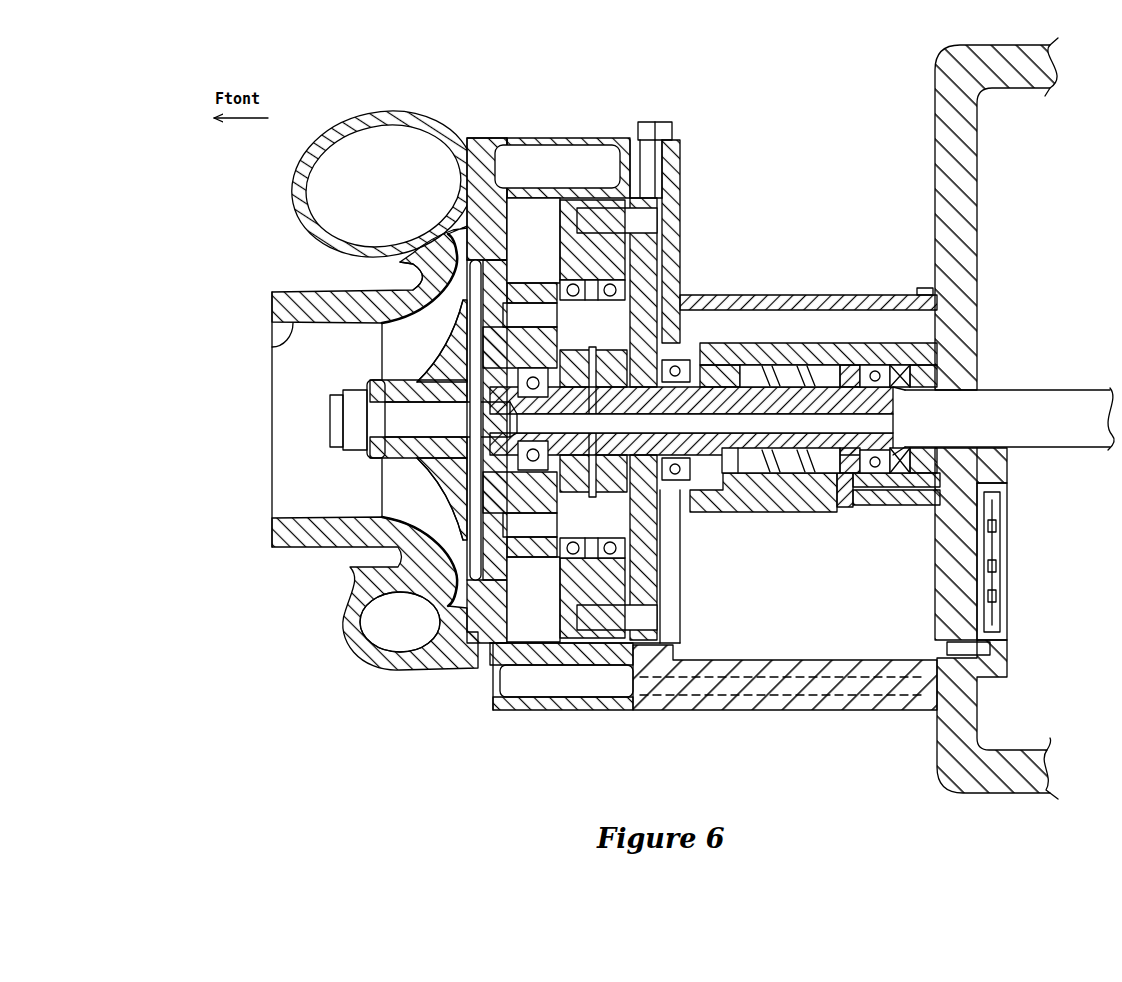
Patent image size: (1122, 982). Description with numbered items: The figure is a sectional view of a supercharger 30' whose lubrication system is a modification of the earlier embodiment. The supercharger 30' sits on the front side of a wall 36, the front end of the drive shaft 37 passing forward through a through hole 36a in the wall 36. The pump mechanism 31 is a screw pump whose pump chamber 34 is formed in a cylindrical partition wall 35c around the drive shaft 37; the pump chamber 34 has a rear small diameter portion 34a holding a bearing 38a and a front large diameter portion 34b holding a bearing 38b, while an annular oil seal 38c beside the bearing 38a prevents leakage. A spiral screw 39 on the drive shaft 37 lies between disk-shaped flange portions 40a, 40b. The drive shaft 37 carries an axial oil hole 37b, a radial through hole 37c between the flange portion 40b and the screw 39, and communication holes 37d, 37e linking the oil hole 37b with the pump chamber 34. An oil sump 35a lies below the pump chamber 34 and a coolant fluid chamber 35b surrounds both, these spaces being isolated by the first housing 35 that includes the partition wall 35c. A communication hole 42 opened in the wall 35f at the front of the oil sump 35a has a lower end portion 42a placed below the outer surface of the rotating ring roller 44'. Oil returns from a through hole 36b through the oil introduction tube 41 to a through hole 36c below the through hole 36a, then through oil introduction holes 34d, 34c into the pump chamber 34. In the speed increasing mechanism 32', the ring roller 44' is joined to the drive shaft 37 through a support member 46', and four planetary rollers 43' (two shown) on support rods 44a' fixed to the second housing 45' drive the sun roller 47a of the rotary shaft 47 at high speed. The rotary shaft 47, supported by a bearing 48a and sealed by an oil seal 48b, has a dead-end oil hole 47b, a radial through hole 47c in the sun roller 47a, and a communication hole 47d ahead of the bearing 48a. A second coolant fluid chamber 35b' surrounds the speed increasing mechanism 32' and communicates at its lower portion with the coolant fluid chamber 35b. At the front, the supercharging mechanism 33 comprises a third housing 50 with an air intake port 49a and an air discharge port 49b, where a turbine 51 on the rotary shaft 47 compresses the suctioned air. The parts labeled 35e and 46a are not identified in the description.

The supercharger 30' is at (782, 104).
The pump mechanism 31 is at (820, 232).
The speed increasing mechanism 32' is at (665, 132).
The supercharging mechanism 33 is at (266, 243).
The pump chamber 34 is at (737, 365).
The small diameter portion 34a is at (962, 362).
The large diameter portion 34b is at (712, 335).
The oil introduction hole 34c is at (845, 507).
The oil introduction hole 34d is at (913, 505).
The first housing 35 is at (684, 176).
The oil sump 35a is at (705, 650).
The coolant fluid chamber 35b is at (785, 509).
The coolant fluid chamber 35b' is at (564, 428).
The partition wall 35c is at (770, 517).
The bracket upper plate 35e is at (778, 297).
The wall 35f is at (685, 149).
The wall 36 is at (935, 114).
The through hole 36a is at (1000, 458).
The through hole 36b is at (940, 656).
The through hole 36c is at (996, 528).
The drive shaft 37 is at (1058, 390).
The oil hole 37b is at (815, 345).
The through hole 37c is at (727, 432).
The communication hole 37d is at (887, 403).
The communication hole 37e is at (705, 425).
The bearing 38a is at (873, 473).
The bearing 38b is at (712, 513).
The oil seal 38c is at (920, 372).
The screw 39 is at (790, 462).
The flange portion 40a is at (802, 378).
The flange portion 40b is at (745, 348).
The oil introduction tube 41 is at (1006, 600).
The communication hole 42 is at (683, 585).
The lower end portion 42a is at (675, 645).
The planetary rollers 43' is at (567, 419).
The ring roller 44' is at (510, 369).
The support rods 44a' is at (432, 503).
The second housing 45' is at (554, 143).
The support member 46' is at (706, 220).
The coil 46a is at (583, 222).
The rotary shaft 47 is at (382, 380).
The sun roller 47a is at (520, 522).
The oil hole 47b is at (452, 500).
The through hole 47c is at (587, 583).
The communication hole 47d is at (500, 410).
The bearing 48a is at (510, 315).
The oil seal 48b is at (375, 281).
The air intake port 49a is at (272, 342).
The air discharge port 49b is at (393, 655).
The third housing 50 is at (296, 549).
The turbine 51 is at (385, 487).